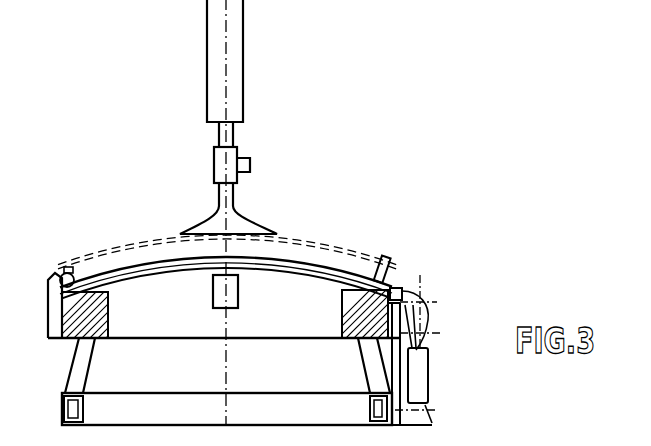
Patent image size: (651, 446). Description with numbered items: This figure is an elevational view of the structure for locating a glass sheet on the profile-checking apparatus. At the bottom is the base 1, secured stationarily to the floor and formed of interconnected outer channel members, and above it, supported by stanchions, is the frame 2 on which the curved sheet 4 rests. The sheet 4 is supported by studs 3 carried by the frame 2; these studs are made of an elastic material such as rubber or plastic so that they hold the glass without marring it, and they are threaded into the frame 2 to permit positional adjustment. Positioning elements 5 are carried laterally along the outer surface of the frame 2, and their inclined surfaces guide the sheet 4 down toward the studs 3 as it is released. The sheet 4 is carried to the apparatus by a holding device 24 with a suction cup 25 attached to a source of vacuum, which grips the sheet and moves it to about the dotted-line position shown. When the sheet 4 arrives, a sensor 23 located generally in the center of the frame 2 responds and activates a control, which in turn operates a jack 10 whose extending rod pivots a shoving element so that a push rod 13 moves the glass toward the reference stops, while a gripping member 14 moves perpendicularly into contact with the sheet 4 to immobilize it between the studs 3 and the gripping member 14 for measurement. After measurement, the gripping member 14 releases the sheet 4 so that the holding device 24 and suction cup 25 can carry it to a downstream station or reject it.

The base 1 is at (310, 402).
The frame 2 is at (342, 322).
The studs 3 is at (82, 291).
The sheet 4 is at (371, 266).
The positioning elements 5 is at (52, 300).
The jack 10 is at (425, 371).
The push rod 13 is at (400, 287).
The gripping member 14 is at (69, 267).
The sensor 23 is at (238, 293).
The holding device 24 is at (236, 41).
The suction cup 25 is at (243, 228).